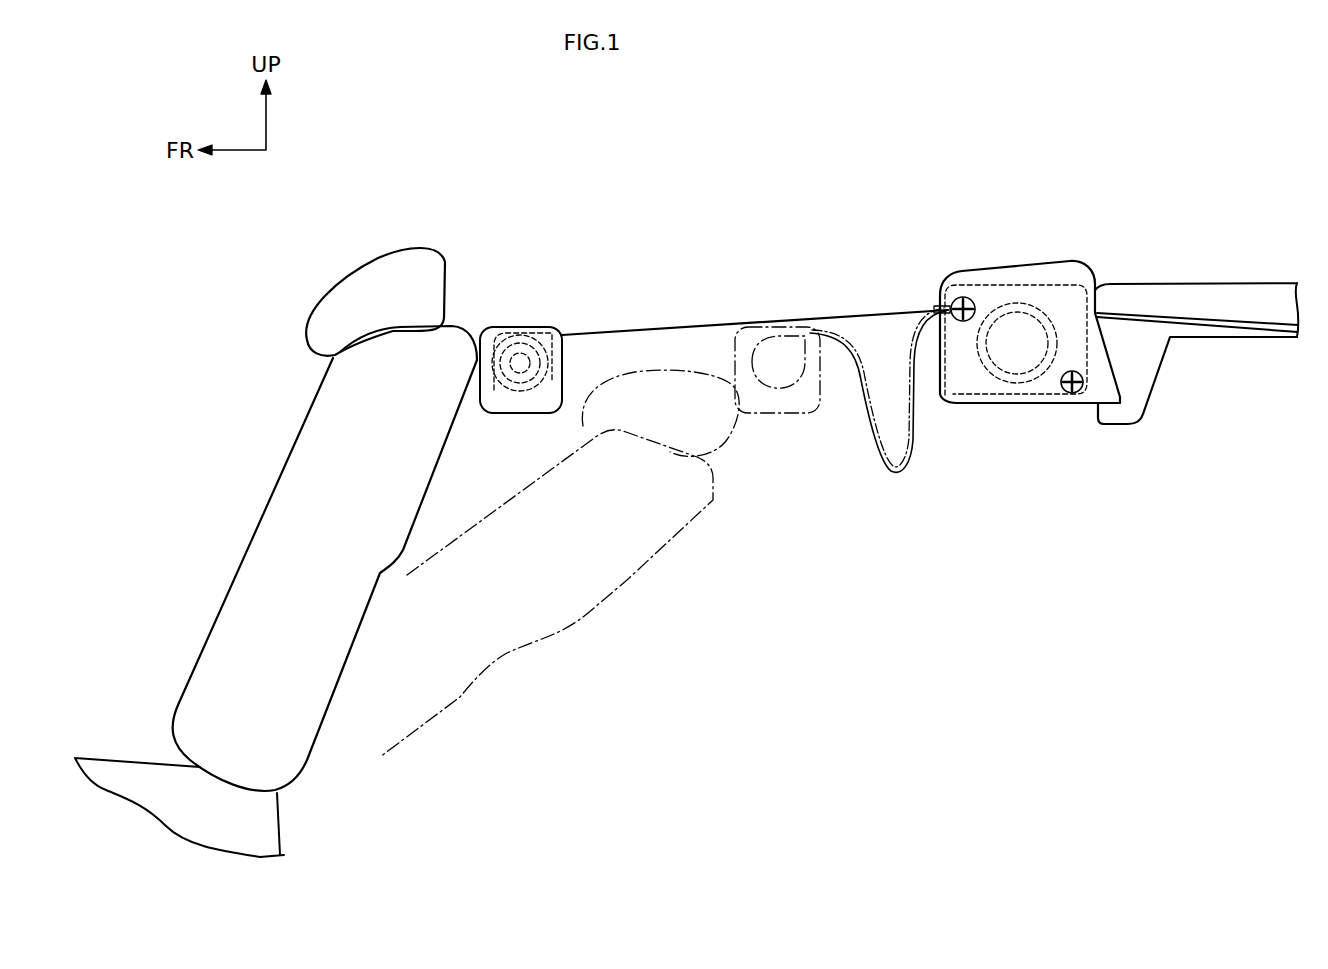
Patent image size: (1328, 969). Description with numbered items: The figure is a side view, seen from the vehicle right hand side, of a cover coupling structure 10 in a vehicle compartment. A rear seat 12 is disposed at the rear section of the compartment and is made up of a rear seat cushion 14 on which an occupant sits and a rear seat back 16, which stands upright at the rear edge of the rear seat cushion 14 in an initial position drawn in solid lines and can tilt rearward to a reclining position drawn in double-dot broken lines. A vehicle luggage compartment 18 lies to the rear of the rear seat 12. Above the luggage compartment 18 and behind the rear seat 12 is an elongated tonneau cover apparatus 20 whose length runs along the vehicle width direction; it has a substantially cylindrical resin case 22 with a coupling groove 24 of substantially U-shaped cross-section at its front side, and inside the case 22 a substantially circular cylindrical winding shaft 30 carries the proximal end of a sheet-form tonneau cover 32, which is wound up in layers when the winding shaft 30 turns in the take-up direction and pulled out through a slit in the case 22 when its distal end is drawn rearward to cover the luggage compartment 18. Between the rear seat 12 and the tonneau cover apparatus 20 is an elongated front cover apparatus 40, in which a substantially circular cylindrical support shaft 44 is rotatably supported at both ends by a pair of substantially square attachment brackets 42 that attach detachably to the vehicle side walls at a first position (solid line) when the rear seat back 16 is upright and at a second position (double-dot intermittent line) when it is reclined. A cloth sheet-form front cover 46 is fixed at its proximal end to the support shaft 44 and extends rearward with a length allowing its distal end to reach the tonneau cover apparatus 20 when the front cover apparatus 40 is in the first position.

The cover coupling structure 10 is at (718, 158).
The rear seat 12 is at (168, 497).
The rear seat cushion 14 is at (125, 766).
The rear seat back 16 is at (288, 471).
The vehicle luggage compartment 18 is at (872, 656).
The tonneau cover apparatus 20 is at (1019, 242).
The case 22 is at (1064, 278).
The coupling groove 24 is at (946, 310).
The winding shaft 30 is at (1003, 386).
The tonneau cover 32 is at (1199, 313).
The front cover apparatus 40 is at (524, 310).
The attachment brackets 42 is at (548, 330).
The support shaft 44 is at (503, 392).
The front cover 46 is at (698, 320).